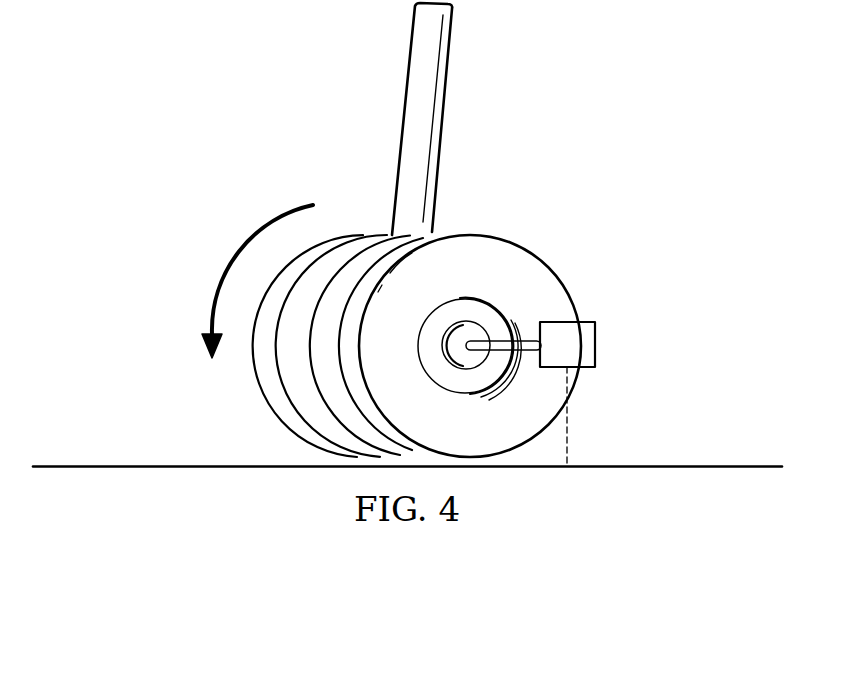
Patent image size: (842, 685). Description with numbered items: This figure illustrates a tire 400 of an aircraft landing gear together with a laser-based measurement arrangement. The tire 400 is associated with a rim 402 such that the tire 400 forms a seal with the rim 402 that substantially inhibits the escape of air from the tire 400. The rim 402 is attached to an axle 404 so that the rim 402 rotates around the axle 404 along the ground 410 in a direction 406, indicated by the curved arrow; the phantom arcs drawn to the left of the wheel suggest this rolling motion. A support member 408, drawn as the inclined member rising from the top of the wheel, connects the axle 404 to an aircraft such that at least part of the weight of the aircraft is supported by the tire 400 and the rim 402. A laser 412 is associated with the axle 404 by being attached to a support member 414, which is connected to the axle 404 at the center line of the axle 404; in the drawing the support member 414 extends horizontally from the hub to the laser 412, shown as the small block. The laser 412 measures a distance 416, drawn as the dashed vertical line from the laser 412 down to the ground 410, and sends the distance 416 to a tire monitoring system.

The tire 400 is at (592, 202).
The rim 402 is at (441, 306).
The axle 404 is at (470, 360).
The direction 406 is at (233, 262).
The support member 408 is at (401, 126).
The ground 410 is at (103, 465).
The laser 412 is at (595, 345).
The support member 414 is at (496, 320).
The distance 416 is at (568, 422).